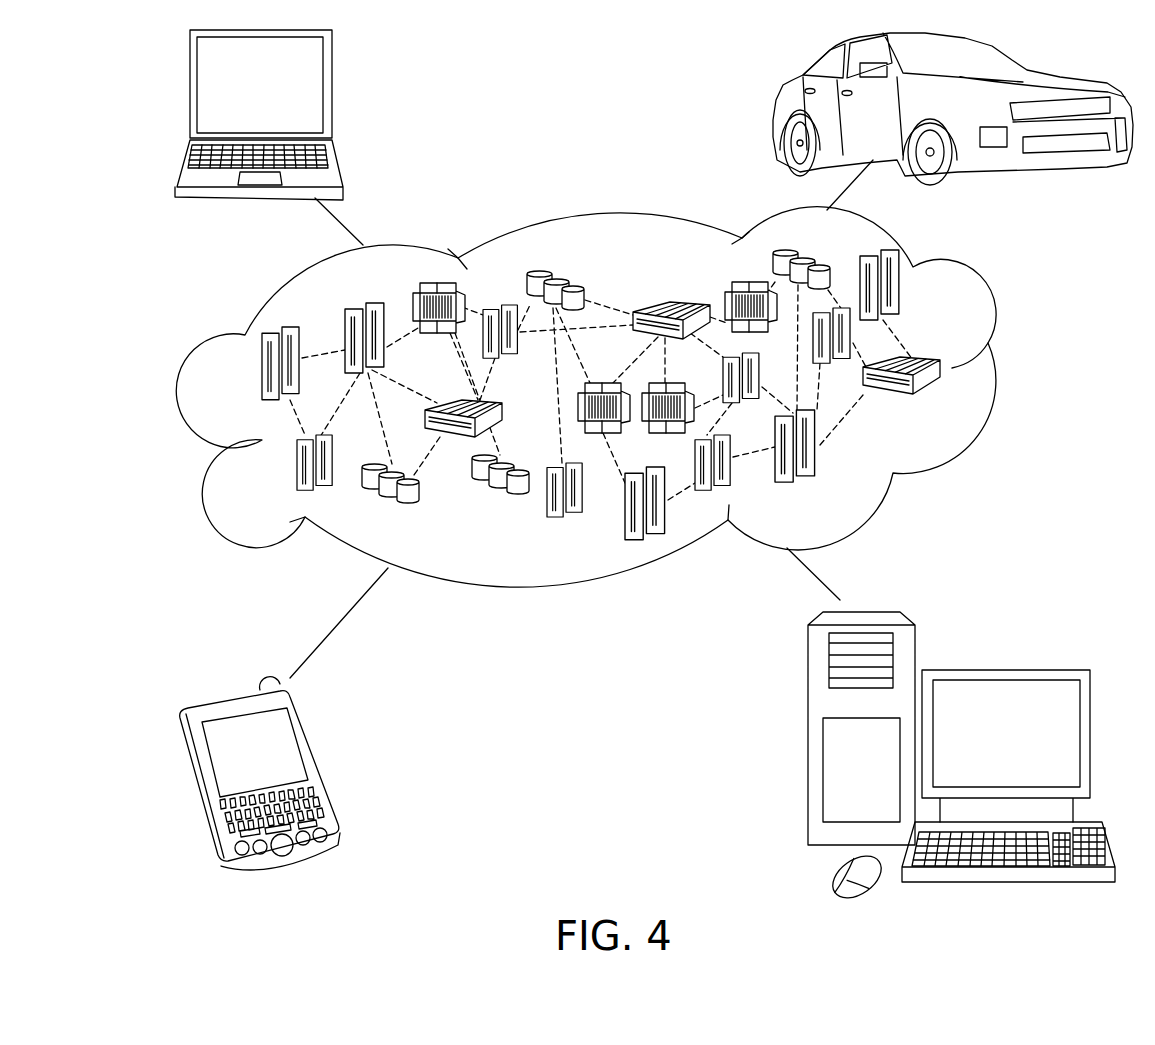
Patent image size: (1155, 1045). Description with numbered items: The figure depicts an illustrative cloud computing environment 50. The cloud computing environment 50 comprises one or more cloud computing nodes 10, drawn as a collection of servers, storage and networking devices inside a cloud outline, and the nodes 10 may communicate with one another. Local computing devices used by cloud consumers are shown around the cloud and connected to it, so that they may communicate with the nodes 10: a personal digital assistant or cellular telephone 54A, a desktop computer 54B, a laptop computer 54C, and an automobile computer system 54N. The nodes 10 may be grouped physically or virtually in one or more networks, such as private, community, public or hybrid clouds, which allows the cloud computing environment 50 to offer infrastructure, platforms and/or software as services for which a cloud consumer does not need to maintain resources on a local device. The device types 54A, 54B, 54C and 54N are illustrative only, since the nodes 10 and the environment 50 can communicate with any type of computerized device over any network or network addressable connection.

The cloud computing node 10 is at (944, 404).
The cloud computing environment 50 is at (1004, 372).
The personal digital assistant (PDA) or cellular telephone 54A is at (321, 764).
The desktop computer 54B is at (1003, 670).
The laptop computer 54C is at (333, 92).
The automobile computer system 54N is at (783, 110).